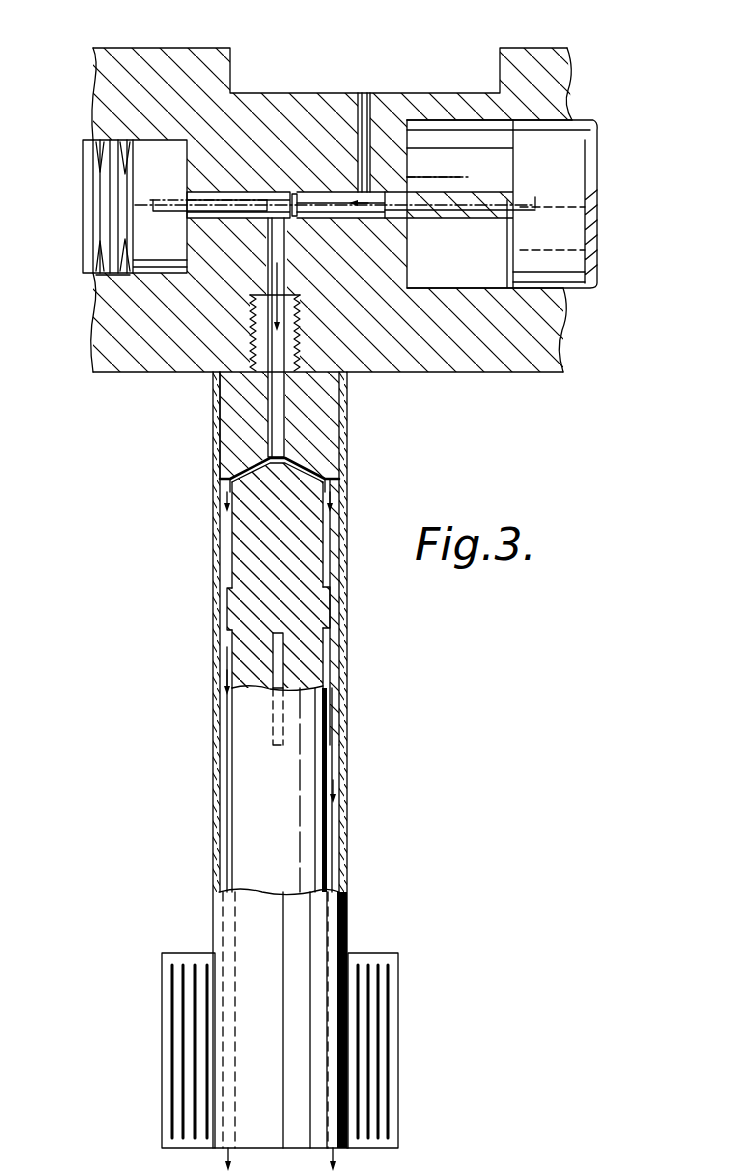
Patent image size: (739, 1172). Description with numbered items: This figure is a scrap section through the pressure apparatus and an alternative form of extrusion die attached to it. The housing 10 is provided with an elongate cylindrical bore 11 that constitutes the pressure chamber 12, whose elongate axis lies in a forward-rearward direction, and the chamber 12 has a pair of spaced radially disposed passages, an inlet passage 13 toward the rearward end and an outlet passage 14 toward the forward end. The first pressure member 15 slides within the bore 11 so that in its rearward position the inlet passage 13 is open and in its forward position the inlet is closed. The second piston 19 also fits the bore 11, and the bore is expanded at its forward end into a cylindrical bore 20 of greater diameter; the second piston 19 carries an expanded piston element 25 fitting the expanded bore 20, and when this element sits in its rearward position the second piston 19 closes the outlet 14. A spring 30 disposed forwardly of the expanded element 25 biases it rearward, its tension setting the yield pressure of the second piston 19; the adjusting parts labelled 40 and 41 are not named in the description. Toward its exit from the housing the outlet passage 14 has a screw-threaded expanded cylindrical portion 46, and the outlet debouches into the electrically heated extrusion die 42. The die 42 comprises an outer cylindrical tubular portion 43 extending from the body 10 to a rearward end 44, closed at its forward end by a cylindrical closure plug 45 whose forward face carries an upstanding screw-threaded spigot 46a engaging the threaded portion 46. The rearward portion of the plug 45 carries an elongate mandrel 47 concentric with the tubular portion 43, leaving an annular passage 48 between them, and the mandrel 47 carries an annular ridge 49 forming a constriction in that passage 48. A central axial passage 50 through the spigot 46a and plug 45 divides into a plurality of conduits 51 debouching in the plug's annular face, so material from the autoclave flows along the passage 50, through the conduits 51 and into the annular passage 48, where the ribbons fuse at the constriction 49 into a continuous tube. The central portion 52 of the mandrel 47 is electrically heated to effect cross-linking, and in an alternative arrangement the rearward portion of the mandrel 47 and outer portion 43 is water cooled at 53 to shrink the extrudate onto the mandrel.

The housing 10 is at (103, 353).
The elongate cylindrical bore 11 is at (228, 193).
The pressure chamber 12 is at (330, 197).
The inlet passage 13 is at (375, 117).
The outlet passage 14 is at (253, 340).
The first pressure member 15 is at (504, 164).
The second piston 19 is at (300, 195).
The expanded bore 20 is at (163, 275).
The expanded piston element 25 is at (148, 148).
The spring 30 is at (110, 278).
The nut 40 is at (418, 200).
The valve stem rod 41 is at (150, 196).
The extrusion die 42 is at (351, 821).
The outer cylindrical tubular portion 43 is at (345, 733).
The rearward end 44 is at (216, 1157).
The closure plug 45 is at (323, 431).
The expanded cylindrical portion 46 is at (300, 340).
The screw-threaded spigot 46a is at (277, 362).
The mandrel 47 is at (300, 550).
The annular passage 48 is at (225, 762).
The annular ridge 49 is at (232, 607).
The axial passage 50 is at (242, 467).
The conduits 51 is at (230, 480).
The electrically heated central portion 52 is at (280, 657).
The water cooled portion 53 is at (398, 1058).